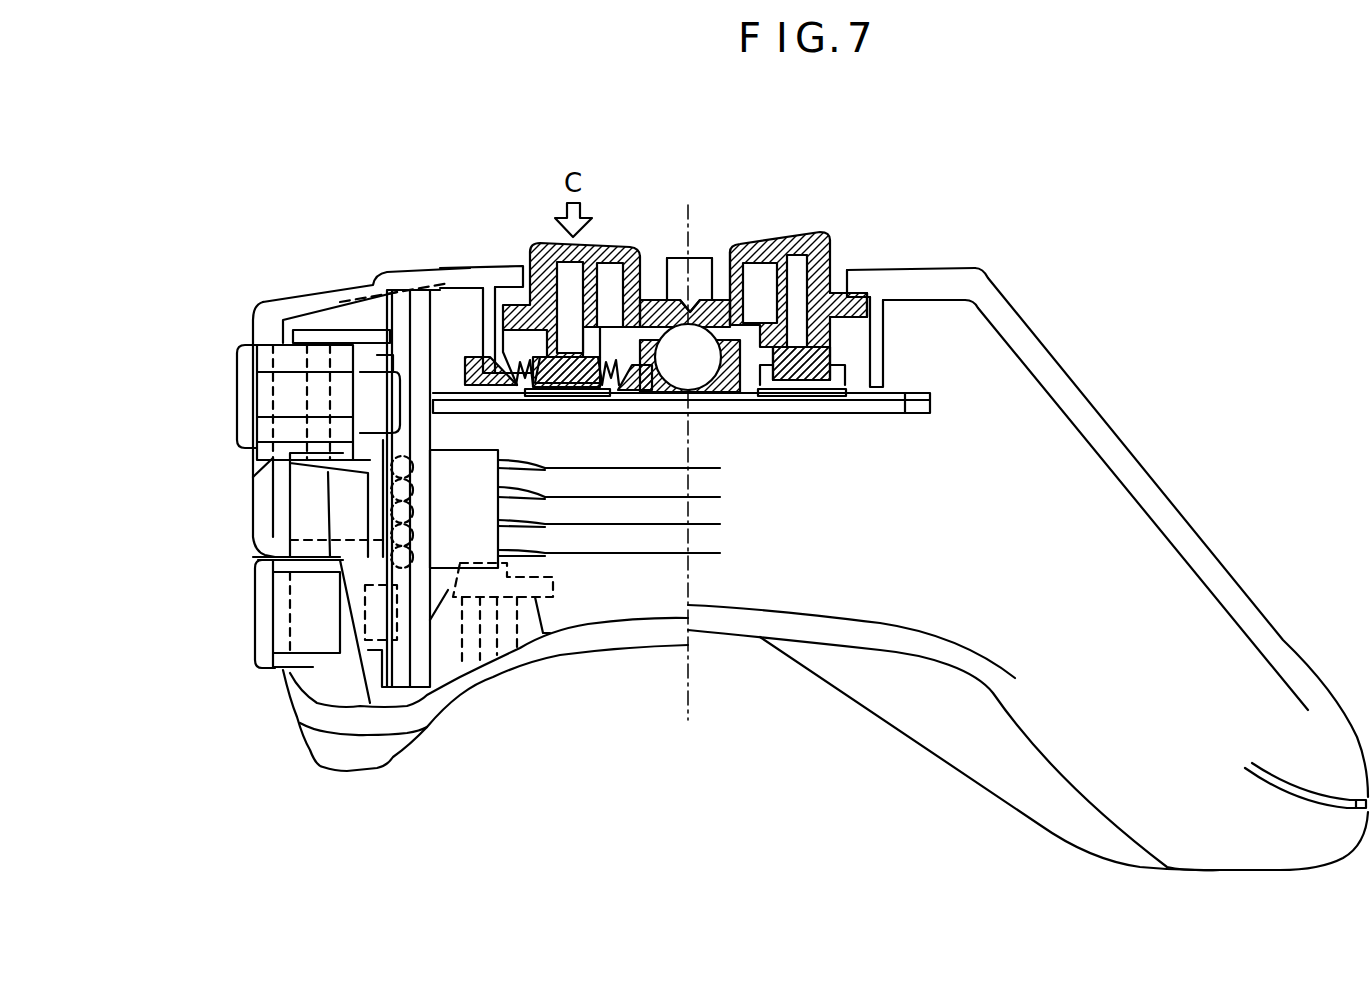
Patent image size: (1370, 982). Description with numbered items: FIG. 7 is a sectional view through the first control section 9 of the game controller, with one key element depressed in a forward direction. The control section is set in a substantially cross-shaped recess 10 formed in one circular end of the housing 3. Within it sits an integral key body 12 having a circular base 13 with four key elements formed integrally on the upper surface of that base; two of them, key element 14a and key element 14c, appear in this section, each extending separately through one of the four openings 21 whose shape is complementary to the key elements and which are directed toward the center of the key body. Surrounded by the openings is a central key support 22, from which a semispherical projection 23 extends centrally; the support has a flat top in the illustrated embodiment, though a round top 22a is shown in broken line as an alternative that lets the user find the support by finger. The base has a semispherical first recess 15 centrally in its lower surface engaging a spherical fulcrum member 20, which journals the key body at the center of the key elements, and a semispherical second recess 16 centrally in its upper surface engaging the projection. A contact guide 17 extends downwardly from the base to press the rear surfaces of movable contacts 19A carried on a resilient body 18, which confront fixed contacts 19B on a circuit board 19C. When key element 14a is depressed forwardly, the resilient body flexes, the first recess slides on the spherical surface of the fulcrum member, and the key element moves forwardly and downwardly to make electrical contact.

The housing 3 is at (967, 270).
The first control section 9 is at (903, 165).
The cross-shaped recess 10 is at (485, 280).
The key body 12 is at (825, 228).
The circular base 13 is at (489, 330).
The key element 14a is at (540, 243).
The key element 14c is at (787, 240).
The first recess 15 is at (655, 290).
The second recess 16 is at (683, 322).
The contact guide 17 is at (548, 350).
The resilient body 18 is at (913, 378).
The movable contacts 19A is at (807, 380).
The fixed contacts 19B is at (584, 406).
The circuit board 19C is at (915, 404).
The fulcrum member 20 is at (728, 255).
The openings 21 is at (843, 270).
The central key support 22 is at (697, 256).
The round top 22a is at (698, 328).
The semispherical projection 23 is at (670, 256).